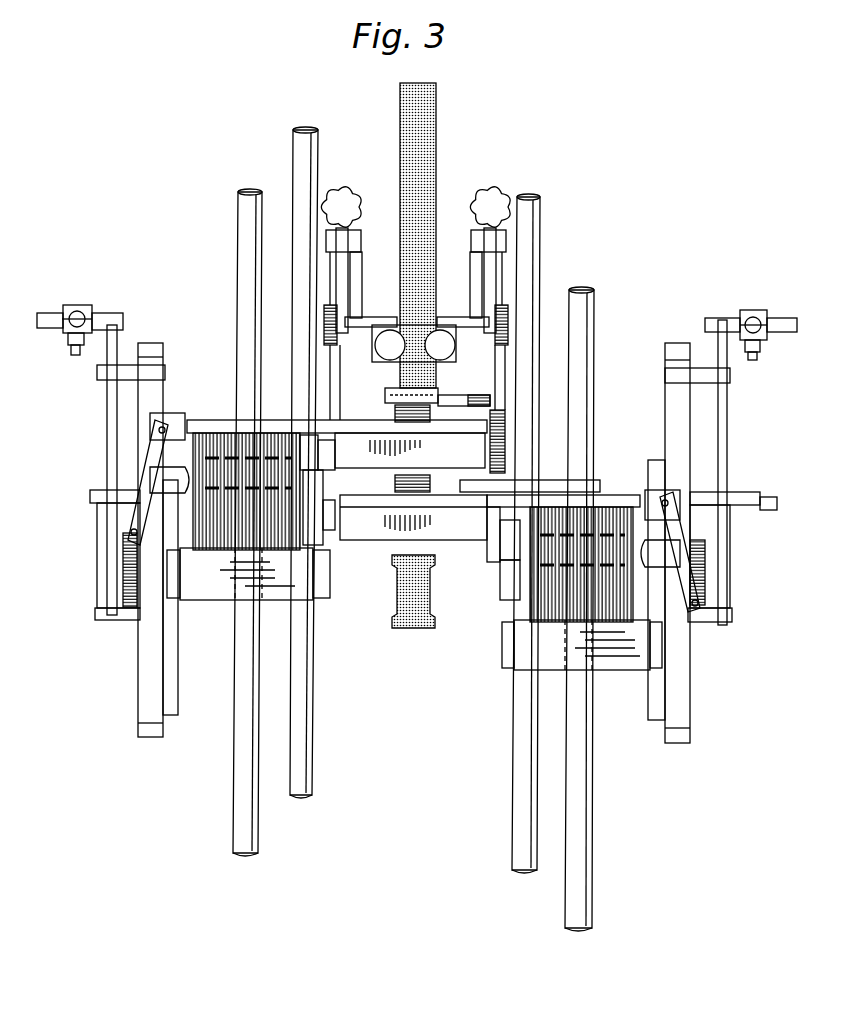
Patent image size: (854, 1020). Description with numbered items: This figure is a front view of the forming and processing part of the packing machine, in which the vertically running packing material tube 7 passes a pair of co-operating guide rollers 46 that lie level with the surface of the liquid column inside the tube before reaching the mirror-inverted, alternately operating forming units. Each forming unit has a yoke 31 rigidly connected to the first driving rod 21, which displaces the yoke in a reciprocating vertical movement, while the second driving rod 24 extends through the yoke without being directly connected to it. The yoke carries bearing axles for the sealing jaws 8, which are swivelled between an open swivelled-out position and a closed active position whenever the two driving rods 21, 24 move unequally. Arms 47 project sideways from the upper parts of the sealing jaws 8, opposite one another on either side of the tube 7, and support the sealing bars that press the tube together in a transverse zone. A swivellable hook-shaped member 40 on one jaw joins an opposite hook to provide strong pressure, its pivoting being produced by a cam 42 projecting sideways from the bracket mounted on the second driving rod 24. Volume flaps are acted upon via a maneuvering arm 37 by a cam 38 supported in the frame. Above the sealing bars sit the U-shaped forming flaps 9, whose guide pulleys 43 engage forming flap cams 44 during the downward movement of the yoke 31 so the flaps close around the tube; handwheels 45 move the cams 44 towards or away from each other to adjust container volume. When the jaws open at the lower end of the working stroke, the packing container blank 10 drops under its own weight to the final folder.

The packing material tube 7 is at (440, 103).
The sealing jaws 8 is at (220, 535).
The forming flaps 9 is at (420, 398).
The packing container blank 10 is at (430, 600).
The first driving rod 21 is at (298, 165).
The second driving rod 24 is at (247, 232).
The yoke 31 is at (305, 585).
The maneuvering arm 37 is at (147, 462).
The cam 38 is at (126, 572).
The hook-shaped member 40 is at (343, 448).
The cam 42 is at (318, 498).
The guide pulleys 43 is at (480, 397).
The forming flap cams 44 is at (506, 450).
The handwheels 45 is at (488, 203).
The guide rollers 46 is at (390, 330).
The arms 47 is at (460, 524).